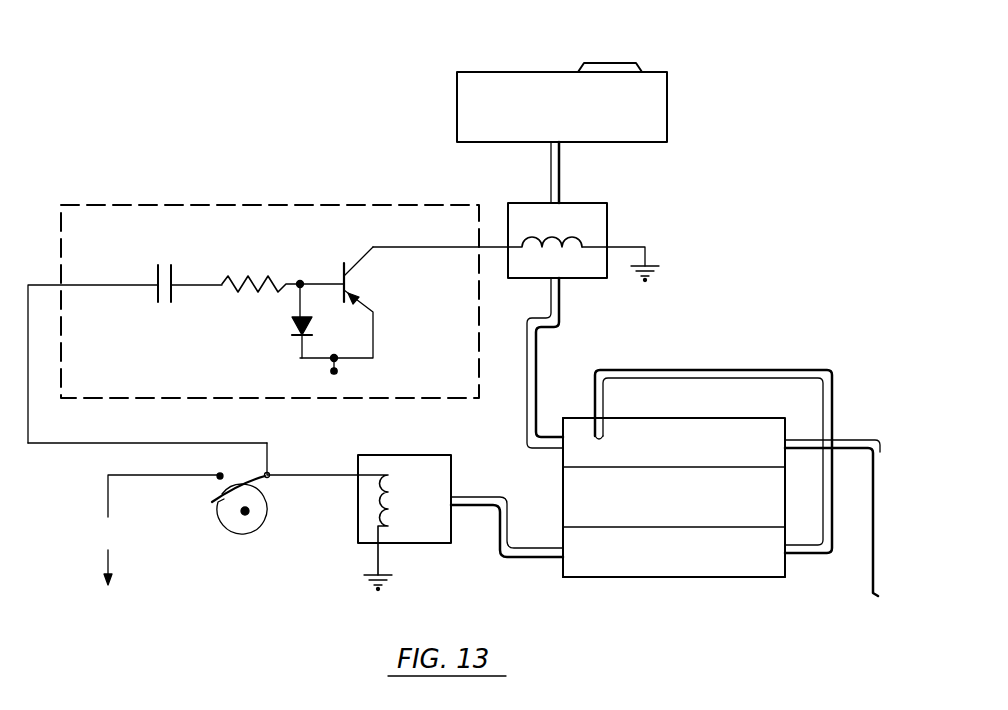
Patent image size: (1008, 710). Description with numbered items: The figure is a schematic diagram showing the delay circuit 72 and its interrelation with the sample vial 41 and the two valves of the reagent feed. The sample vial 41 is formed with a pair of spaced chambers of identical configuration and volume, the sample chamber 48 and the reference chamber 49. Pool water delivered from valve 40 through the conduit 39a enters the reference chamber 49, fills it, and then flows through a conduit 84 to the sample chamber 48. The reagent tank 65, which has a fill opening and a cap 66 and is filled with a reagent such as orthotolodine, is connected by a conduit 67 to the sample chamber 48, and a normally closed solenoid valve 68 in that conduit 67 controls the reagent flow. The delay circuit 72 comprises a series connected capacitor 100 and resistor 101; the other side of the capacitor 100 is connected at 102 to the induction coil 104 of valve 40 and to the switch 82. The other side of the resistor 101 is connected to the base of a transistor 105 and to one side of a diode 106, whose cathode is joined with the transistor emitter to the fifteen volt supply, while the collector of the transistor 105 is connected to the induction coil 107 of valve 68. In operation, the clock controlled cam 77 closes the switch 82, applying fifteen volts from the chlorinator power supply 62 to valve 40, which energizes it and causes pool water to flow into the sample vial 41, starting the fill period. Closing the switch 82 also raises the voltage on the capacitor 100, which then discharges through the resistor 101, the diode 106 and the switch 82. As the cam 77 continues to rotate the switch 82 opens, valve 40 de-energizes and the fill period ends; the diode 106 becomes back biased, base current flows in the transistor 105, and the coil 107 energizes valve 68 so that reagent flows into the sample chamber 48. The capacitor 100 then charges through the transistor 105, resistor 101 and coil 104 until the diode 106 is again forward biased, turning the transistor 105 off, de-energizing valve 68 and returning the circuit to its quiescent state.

The reagent tank 65 is at (491, 68).
The cap 66 is at (617, 63).
The solenoid valve 68 is at (607, 232).
The induction coil 107 is at (562, 232).
The conduit 67 is at (561, 300).
The conduit 84 is at (742, 370).
The sample chamber 48 is at (742, 418).
The reference chamber 49 is at (608, 577).
The sample vial 41 is at (681, 587).
The valve 40 is at (416, 455).
The induction coil 104 is at (392, 500).
The pump outlet conduit 39a is at (538, 560).
The delay circuit 72 is at (342, 205).
The capacitor 100 is at (156, 295).
The resistor 101 is at (247, 293).
The transistor 105 is at (348, 283).
The diode 106 is at (292, 328).
The connection point 102 is at (268, 472).
The switch 82 is at (218, 481).
The cam 77 is at (256, 533).
The power supply 62 is at (121, 579).